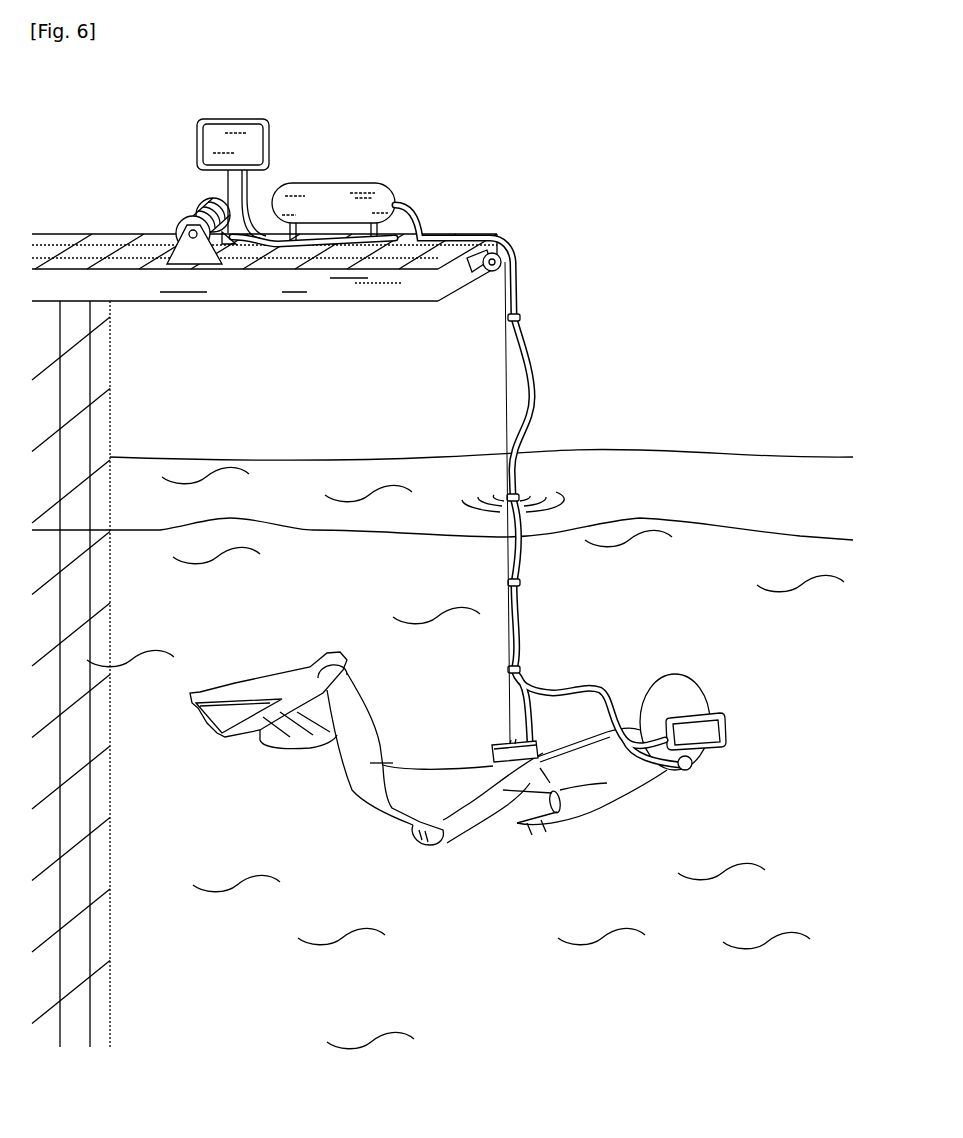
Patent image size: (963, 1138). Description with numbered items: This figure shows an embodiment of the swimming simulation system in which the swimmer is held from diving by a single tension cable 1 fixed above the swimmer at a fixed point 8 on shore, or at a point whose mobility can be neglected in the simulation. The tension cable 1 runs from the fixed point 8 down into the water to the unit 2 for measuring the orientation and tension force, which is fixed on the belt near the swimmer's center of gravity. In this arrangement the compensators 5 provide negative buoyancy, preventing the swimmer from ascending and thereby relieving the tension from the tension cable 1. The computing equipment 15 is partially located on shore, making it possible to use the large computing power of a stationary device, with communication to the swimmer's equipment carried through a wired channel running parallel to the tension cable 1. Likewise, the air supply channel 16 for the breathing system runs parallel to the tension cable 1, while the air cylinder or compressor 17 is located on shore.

The tension cable 1 is at (509, 702).
The unit for measuring the orientation and tension force 2 is at (493, 753).
The buoyancy compensators 5 is at (530, 805).
The fixed point on shore 8 is at (196, 241).
The computing equipment 15 is at (250, 148).
The air supply channel 16 is at (521, 607).
The air cylinder (compressor) 17 is at (365, 200).